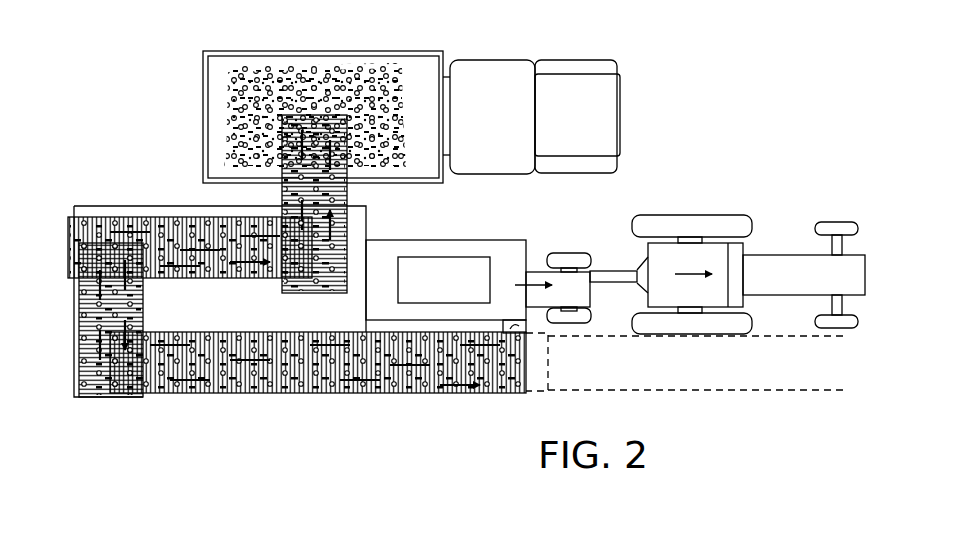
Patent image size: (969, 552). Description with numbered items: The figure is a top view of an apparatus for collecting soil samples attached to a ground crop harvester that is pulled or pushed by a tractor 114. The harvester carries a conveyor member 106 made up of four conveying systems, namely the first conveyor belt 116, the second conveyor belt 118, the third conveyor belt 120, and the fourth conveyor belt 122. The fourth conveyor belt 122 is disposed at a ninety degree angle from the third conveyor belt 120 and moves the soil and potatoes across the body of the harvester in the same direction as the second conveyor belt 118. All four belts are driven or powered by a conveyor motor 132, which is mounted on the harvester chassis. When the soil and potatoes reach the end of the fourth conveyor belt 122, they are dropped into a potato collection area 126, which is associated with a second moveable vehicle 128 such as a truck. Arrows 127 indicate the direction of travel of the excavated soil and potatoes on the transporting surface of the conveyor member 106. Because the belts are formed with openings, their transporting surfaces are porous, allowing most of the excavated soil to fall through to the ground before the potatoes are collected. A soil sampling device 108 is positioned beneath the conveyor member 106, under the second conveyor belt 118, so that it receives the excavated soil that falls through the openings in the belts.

The conveyor member 106 is at (412, 390).
The soil sampling device 108 is at (147, 297).
The tractor 114 is at (787, 255).
The first conveyor belt 116 is at (250, 385).
The second conveyor belt 118 is at (93, 380).
The third conveyor belt 120 is at (178, 228).
The fourth conveyor belt 122 is at (338, 193).
The potato collection area 126 is at (366, 78).
The arrows 127 is at (300, 110).
The second moveable vehicle 128 is at (513, 68).
The conveyor motor 132 is at (458, 266).